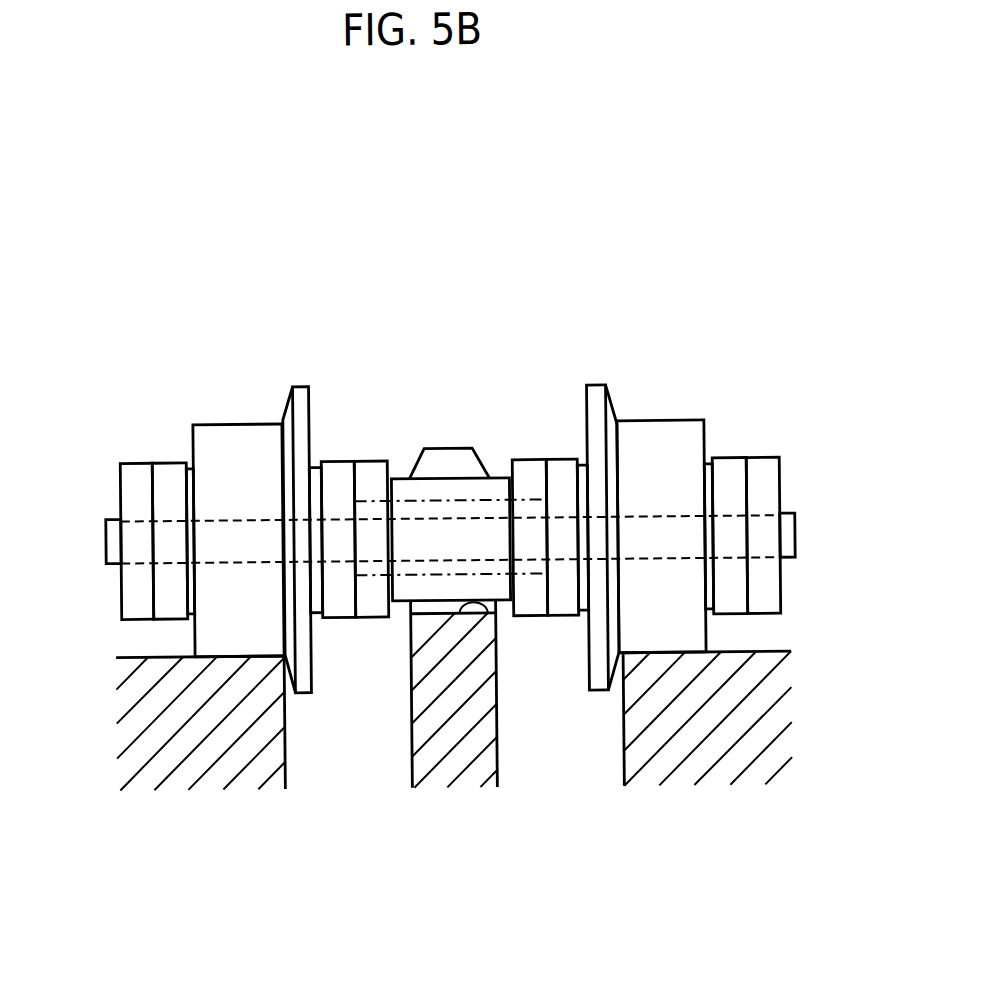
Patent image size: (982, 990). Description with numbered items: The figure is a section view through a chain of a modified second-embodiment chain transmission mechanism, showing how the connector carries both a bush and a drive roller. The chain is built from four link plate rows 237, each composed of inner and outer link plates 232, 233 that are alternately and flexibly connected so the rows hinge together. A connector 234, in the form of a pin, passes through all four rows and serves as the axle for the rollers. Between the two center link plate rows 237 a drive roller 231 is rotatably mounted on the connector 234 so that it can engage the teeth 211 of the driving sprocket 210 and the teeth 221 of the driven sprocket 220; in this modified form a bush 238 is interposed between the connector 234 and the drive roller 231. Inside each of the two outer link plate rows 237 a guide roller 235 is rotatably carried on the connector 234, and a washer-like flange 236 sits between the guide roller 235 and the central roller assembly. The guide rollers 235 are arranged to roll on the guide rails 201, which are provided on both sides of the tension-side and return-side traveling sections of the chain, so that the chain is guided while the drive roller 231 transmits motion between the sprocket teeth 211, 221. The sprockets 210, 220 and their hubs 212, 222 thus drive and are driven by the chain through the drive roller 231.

The guide rail 201 is at (119, 654).
The driving sprocket 210 is at (407, 694).
The driven sprocket 220 is at (410, 665).
The teeth of the driving sprocket 211 is at (450, 420).
The teeth of the driven sprocket 221 is at (440, 448).
The pivot / bearing protrusion 212 is at (521, 663).
The pivot / bearing protrusion (alternate) 222 is at (488, 614).
The drive roller 231 is at (500, 487).
The inner link plate 232 is at (174, 460).
The outer link plate 233 is at (139, 460).
The connector 234 is at (794, 520).
The guide roller 235 is at (255, 430).
The thrust flange / washer 236 is at (309, 385).
The link plate row 237 is at (190, 354).
The hidden hub / shaft portion 238 is at (411, 562).